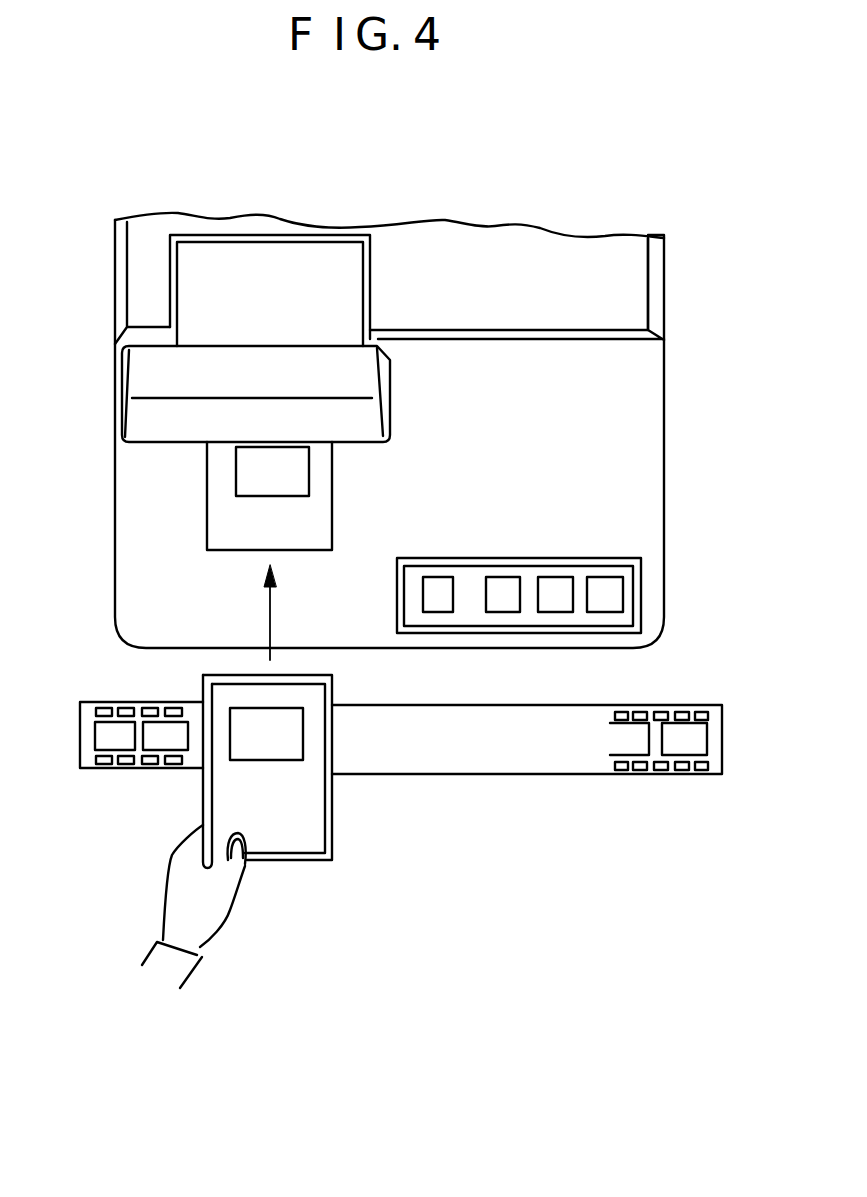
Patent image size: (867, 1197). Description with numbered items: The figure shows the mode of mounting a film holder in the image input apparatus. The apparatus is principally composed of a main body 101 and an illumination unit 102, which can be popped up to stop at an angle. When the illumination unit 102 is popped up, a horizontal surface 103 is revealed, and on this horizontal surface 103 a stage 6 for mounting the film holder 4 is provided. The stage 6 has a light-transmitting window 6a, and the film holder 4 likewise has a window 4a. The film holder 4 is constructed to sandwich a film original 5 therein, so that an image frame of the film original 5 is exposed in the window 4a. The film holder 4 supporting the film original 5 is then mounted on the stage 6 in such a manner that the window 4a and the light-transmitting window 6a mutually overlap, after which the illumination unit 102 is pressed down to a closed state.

The main body 101 is at (620, 289).
The illumination unit 102 is at (148, 375).
The horizontal surface 103 is at (132, 610).
The stage 6 is at (207, 527).
The light-transmitting window 6a is at (247, 470).
The film holder 4 is at (313, 810).
The window 4a is at (285, 725).
The film original 5 is at (603, 778).